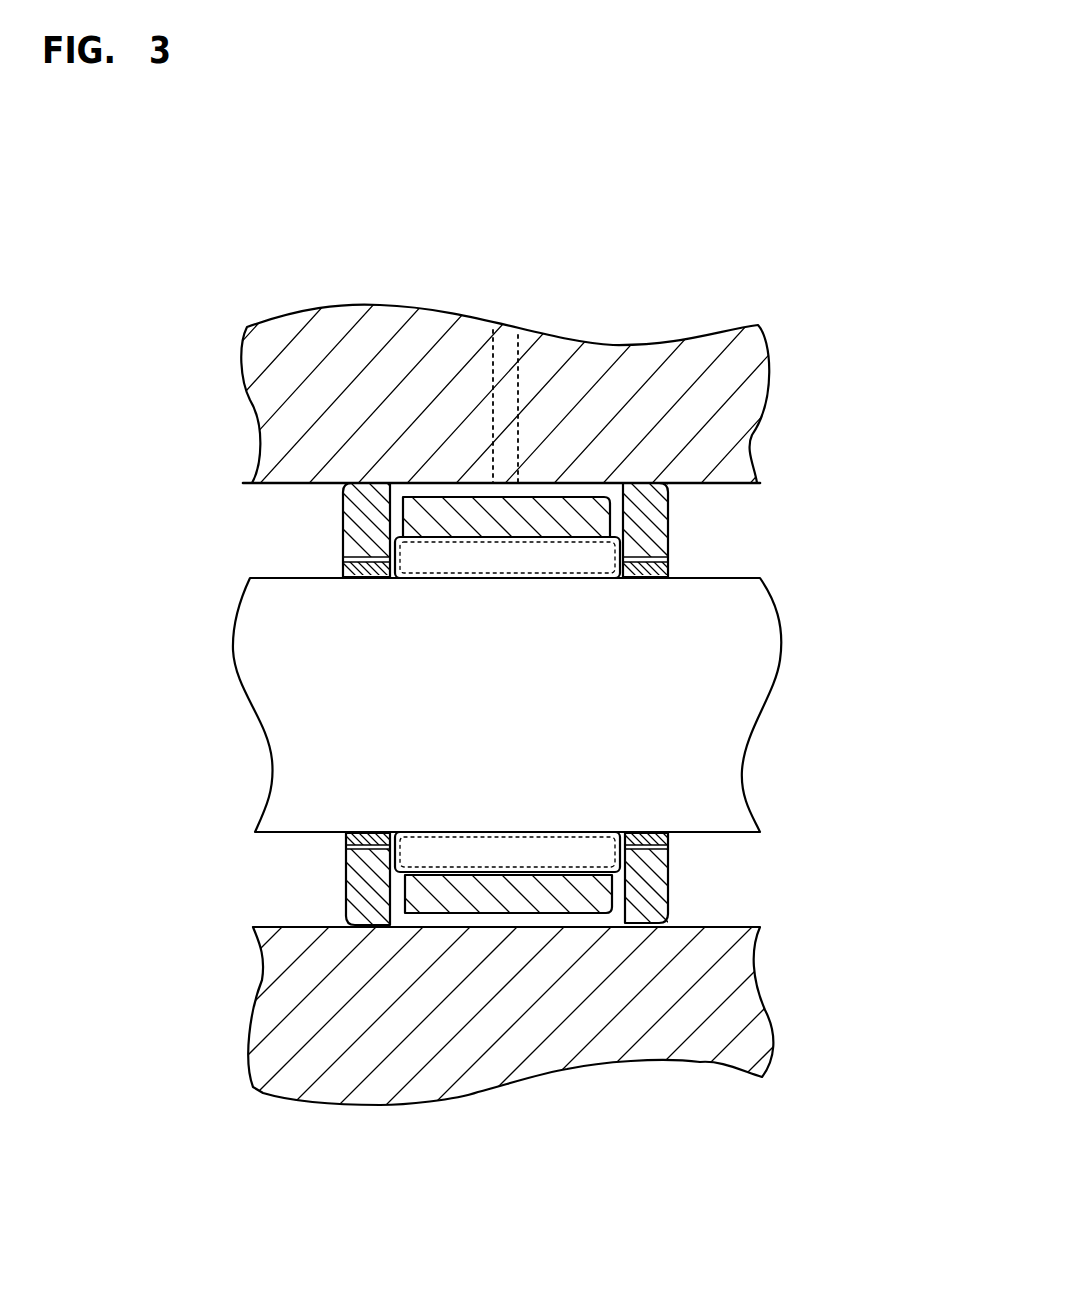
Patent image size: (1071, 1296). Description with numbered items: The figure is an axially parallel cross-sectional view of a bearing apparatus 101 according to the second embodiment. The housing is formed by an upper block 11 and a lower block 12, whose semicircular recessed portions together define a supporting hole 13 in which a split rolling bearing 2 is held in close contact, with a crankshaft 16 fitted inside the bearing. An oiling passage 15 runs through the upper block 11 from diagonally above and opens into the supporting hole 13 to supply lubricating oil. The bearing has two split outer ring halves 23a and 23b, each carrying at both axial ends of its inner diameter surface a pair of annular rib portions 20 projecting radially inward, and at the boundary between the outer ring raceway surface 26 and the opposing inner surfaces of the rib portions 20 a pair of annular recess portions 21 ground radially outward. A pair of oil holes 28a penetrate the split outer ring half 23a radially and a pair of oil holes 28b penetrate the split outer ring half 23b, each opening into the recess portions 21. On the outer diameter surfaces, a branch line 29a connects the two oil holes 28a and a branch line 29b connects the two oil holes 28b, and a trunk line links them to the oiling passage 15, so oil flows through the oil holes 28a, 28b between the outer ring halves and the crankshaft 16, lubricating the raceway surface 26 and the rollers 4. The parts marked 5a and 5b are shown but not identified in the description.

The bearing apparatus 101 is at (817, 250).
The upper block 11 is at (702, 373).
The lower block 12 is at (728, 1038).
The supporting hole 13 is at (335, 483).
The oiling passage 15 is at (507, 357).
The crankshaft 16 is at (333, 758).
The split rolling bearing 2 is at (312, 506).
The rollers 4 is at (422, 548).
The upper seal ring 5a is at (668, 560).
The lower seal ring 5b is at (663, 832).
The annular rib portions 20 is at (375, 550).
The annular recess portions 21 is at (398, 556).
The split outer ring half 23a is at (343, 508).
The split outer ring half 23b is at (343, 928).
The outer ring raceway surface 26 is at (467, 537).
The oil holes 28a is at (403, 496).
The oil holes 28b is at (403, 912).
The branch line 29a is at (558, 478).
The branch line 29b is at (533, 933).